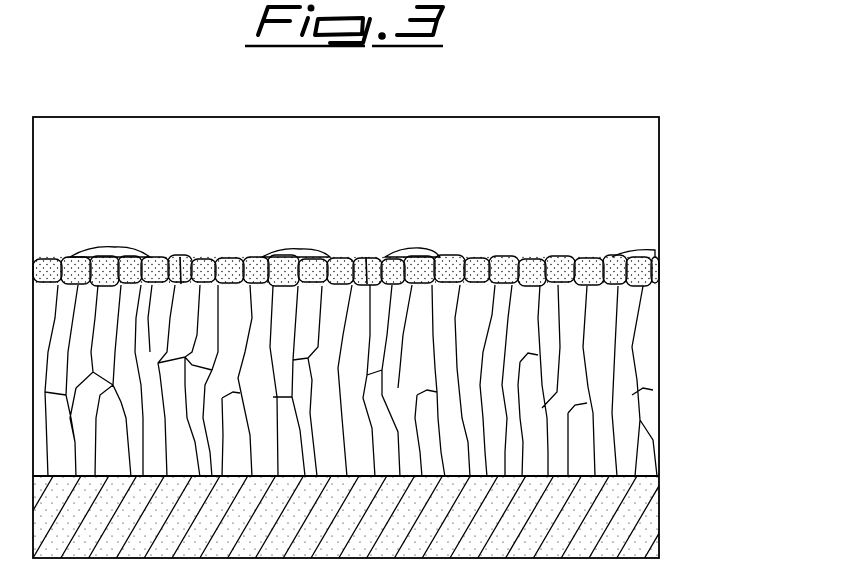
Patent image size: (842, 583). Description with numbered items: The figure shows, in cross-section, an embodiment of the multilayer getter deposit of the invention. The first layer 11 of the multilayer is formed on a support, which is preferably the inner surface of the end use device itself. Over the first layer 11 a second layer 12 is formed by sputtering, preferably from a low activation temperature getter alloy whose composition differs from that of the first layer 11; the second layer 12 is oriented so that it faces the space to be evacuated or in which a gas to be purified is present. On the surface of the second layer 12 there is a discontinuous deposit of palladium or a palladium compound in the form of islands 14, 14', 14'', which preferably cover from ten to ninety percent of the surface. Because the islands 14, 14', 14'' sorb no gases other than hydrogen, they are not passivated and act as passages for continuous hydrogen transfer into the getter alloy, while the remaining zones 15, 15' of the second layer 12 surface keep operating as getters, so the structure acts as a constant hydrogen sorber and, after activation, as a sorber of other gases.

The first layer 11 is at (633, 390).
The second layer 12 is at (659, 262).
The island 14 is at (110, 224).
The island 14' is at (295, 215).
The island 14'' is at (425, 215).
The remaining zone 15 is at (195, 240).
The remaining zone 15' is at (362, 239).